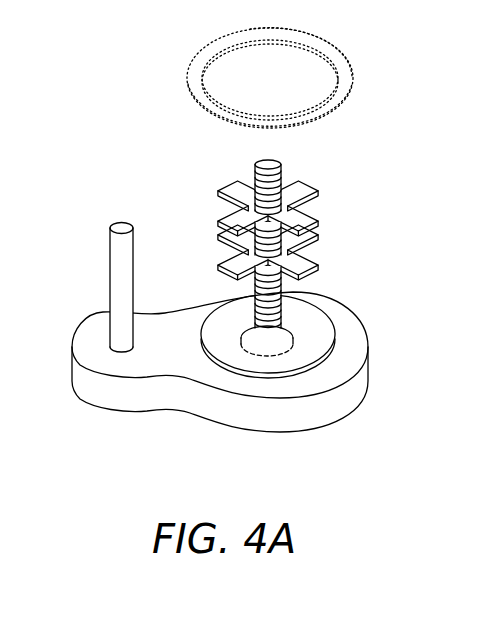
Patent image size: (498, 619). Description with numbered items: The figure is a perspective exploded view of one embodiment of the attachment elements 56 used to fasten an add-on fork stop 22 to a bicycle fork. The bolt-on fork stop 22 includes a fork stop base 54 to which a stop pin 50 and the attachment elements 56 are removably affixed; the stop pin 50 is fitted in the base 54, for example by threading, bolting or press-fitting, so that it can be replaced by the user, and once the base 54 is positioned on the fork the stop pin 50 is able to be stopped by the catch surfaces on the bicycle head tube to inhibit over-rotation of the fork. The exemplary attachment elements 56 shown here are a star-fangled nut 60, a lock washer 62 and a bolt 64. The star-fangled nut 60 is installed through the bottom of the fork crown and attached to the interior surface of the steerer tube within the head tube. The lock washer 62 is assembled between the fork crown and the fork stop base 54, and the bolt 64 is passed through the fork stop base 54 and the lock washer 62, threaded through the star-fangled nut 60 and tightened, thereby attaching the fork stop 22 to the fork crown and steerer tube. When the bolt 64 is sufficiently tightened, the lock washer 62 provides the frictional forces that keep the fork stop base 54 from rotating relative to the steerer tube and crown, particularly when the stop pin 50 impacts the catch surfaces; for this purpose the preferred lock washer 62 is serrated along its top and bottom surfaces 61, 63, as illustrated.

The fork stop 22 is at (160, 222).
The stop pin 50 is at (120, 280).
The fork stop base 54 is at (92, 340).
The attachment elements 56 is at (357, 242).
The star-fangled nut 60 is at (297, 190).
The top surface of lock washer 61 is at (343, 100).
The lock washer 62 is at (342, 68).
The bottom surface of lock washer 63 is at (303, 35).
The bolt 64 is at (253, 293).